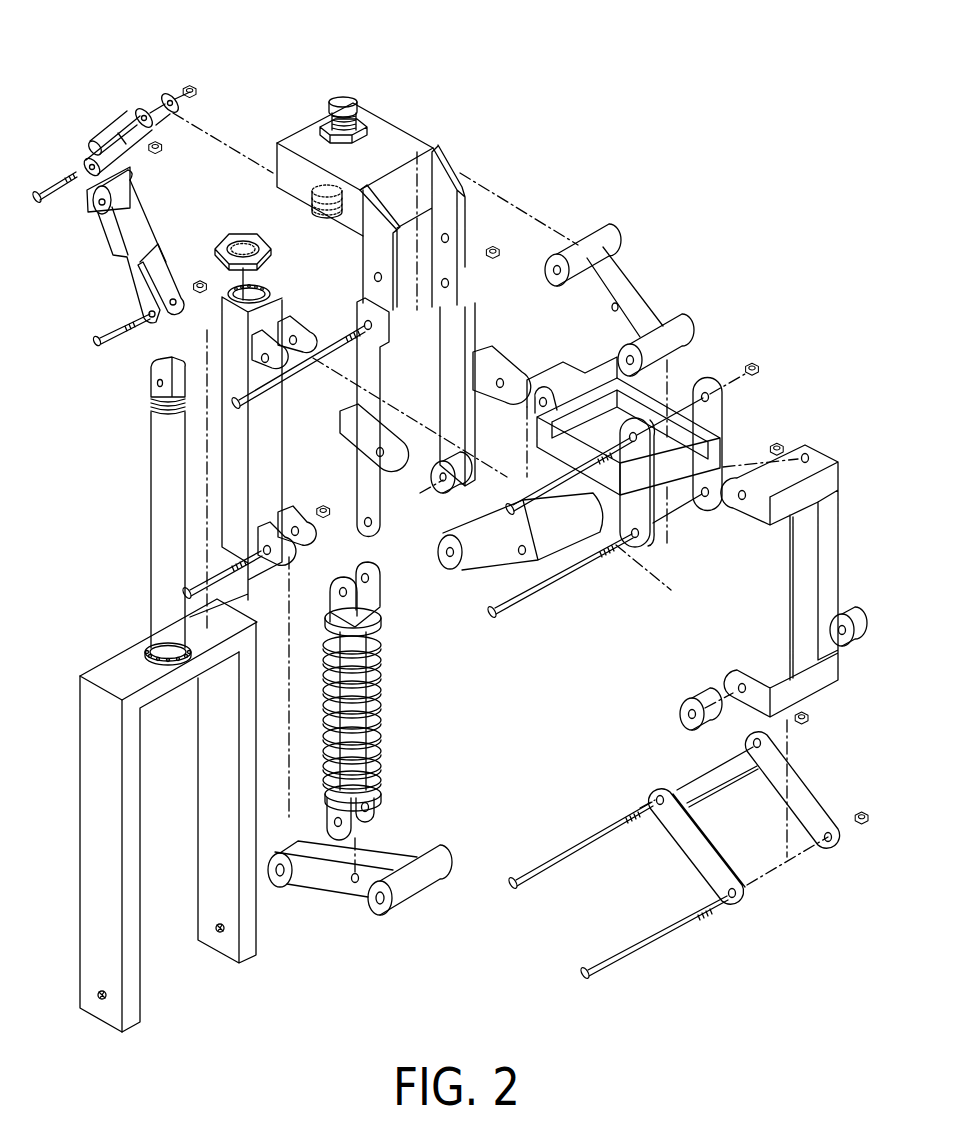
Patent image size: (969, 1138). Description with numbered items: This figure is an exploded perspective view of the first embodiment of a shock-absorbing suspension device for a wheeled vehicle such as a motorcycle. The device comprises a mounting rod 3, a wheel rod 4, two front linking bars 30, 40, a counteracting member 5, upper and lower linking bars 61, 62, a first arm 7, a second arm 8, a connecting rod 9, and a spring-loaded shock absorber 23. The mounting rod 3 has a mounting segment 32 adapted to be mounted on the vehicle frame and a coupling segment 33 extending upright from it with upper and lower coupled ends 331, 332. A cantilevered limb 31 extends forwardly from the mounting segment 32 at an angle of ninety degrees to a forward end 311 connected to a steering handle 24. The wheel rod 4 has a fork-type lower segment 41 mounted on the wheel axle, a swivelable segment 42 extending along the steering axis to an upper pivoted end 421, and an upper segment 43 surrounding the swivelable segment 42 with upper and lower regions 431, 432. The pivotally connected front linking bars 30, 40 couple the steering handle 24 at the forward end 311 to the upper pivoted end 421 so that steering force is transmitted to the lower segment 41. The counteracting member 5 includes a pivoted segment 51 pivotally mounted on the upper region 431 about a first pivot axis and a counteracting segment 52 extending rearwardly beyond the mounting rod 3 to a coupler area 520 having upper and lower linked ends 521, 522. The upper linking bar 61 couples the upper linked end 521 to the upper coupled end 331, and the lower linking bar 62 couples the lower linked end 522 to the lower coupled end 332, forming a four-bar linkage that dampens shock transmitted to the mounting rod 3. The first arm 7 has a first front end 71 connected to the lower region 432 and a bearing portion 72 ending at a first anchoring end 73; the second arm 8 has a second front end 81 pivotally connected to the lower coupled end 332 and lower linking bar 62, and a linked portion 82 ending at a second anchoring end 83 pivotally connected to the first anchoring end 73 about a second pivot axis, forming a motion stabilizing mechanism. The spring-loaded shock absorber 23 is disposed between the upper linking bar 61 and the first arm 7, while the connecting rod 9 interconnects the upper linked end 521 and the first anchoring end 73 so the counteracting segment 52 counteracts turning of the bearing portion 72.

The mounting rod 3 is at (442, 112).
The wheel rod 4 is at (72, 818).
The counteracting member 5 is at (748, 393).
The first arm 7 is at (322, 898).
The second arm 8 is at (742, 908).
The connecting rod 9 is at (822, 558).
The spring-loaded shock absorber 23 is at (378, 681).
The steering handle 24 is at (343, 102).
The front linking bar 30 is at (116, 145).
The cantilevered limb 31 is at (381, 134).
The mounting segment 32 is at (383, 250).
The coupling segment 33 is at (400, 360).
The front linking bar 40 is at (114, 234).
The fork-type lower segment 41 is at (80, 708).
The swivelable segment 42 is at (150, 557).
The upper segment 43 is at (210, 424).
The pivoted segment 51 is at (538, 400).
The counteracting segment 52 is at (664, 494).
The upper linking bar 61 is at (628, 272).
The lower linking bar 62 is at (481, 575).
The first front end 71 is at (280, 888).
The bearing portion 72 is at (344, 884).
The first anchoring end 73 is at (388, 904).
The second front end 81 is at (653, 791).
The linked portion 82 is at (697, 848).
The second anchoring end 83 is at (730, 904).
The forward end 311 is at (313, 172).
The upper coupled end 331 is at (366, 324).
The lower coupled end 332 is at (373, 526).
The upper pivoted end 421 is at (150, 383).
The upper region 431 is at (263, 350).
The lower region 432 is at (262, 528).
The coupler area 520 is at (720, 444).
The upper linked end 521 is at (640, 432).
The lower linked end 522 is at (636, 540).